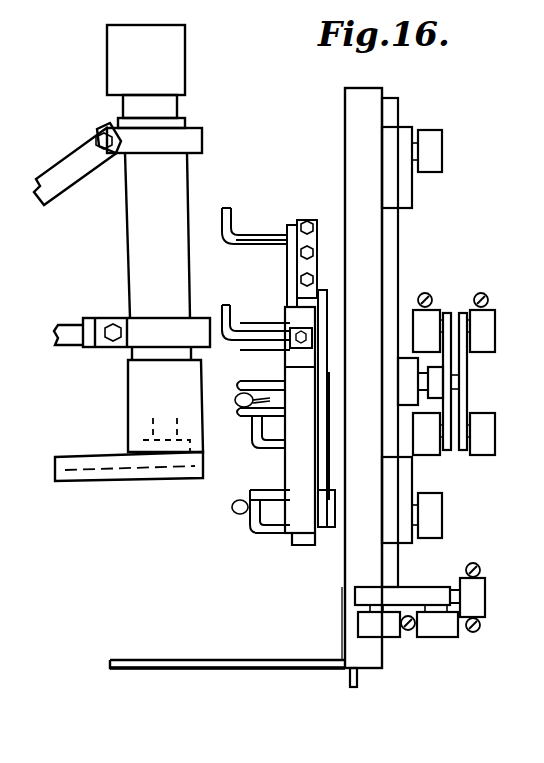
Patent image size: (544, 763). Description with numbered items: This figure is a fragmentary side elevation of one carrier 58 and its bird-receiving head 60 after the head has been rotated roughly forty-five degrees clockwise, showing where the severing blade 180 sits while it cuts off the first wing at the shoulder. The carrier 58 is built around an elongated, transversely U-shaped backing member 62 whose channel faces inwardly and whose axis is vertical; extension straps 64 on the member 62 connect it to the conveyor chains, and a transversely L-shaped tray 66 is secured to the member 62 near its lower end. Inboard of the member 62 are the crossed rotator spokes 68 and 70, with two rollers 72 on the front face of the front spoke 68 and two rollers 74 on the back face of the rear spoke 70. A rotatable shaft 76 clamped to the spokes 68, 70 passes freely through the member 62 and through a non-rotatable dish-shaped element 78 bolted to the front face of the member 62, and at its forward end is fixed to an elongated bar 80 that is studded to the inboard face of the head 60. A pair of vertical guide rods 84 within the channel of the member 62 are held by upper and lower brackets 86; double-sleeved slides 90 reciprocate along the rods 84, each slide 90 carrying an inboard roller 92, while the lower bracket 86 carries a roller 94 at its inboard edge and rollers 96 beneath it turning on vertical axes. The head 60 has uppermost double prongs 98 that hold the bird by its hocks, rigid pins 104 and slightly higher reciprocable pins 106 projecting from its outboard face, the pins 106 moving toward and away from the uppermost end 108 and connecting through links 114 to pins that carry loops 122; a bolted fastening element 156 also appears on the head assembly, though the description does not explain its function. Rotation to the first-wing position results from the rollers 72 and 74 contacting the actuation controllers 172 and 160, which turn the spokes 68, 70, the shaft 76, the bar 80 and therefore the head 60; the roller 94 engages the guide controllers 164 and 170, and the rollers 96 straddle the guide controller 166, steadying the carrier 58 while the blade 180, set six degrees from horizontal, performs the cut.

The carrier 58 is at (344, 108).
The bird-receiving head 60 is at (290, 545).
The backing member 62 is at (378, 241).
The extension strap 64 is at (349, 676).
The tray 66 is at (147, 660).
The front rotator spoke 68 is at (448, 313).
The rear rotator spoke 70 is at (468, 360).
The roller 72 is at (413, 325).
The roller 74 is at (496, 318).
The rotatable shaft 76 is at (468, 380).
The dish-shaped element 78 is at (338, 394).
The bar 80 is at (332, 342).
The guide rod 84 is at (399, 104).
The bracket 86 is at (414, 592).
The slide 90 is at (408, 191).
The roller 92 is at (440, 140).
The roller 94 is at (486, 597).
The roller 96 is at (392, 640).
The double prong 98 is at (231, 250).
The rigid pin 104 is at (256, 412).
The reciprocable pin 106 is at (268, 338).
The uppermost end 108 is at (286, 265).
The link 114 is at (335, 452).
The loop 122 is at (232, 401).
The bolt plate 156 is at (293, 228).
The actuation controller 160 is at (487, 297).
The guide controller 164 is at (476, 572).
The guide controller 166 is at (406, 633).
The guide controller 170 is at (482, 628).
The actuation controller 172 is at (432, 297).
The blade 180 is at (212, 478).